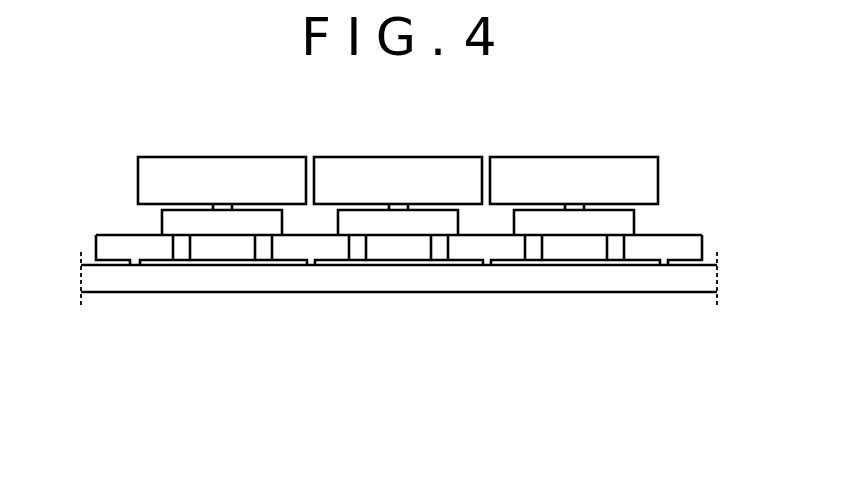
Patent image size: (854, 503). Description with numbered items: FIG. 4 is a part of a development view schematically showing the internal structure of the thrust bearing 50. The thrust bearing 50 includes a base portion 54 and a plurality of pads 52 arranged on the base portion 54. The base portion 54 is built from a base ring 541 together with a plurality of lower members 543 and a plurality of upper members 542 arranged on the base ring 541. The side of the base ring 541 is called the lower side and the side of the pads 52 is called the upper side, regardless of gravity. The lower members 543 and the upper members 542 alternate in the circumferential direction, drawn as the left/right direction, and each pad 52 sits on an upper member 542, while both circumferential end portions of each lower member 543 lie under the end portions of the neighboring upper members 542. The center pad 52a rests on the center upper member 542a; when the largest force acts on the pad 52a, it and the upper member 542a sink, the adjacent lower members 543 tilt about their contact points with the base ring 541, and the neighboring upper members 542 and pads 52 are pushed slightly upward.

The thrust bearing 50 is at (120, 111).
The pad 52 is at (221, 177).
The pad 52a is at (395, 177).
The base portion 54 is at (267, 347).
The base ring 541 is at (99, 283).
The upper member 542 is at (223, 248).
The upper member 542a is at (398, 250).
The lower member 543 is at (150, 250).